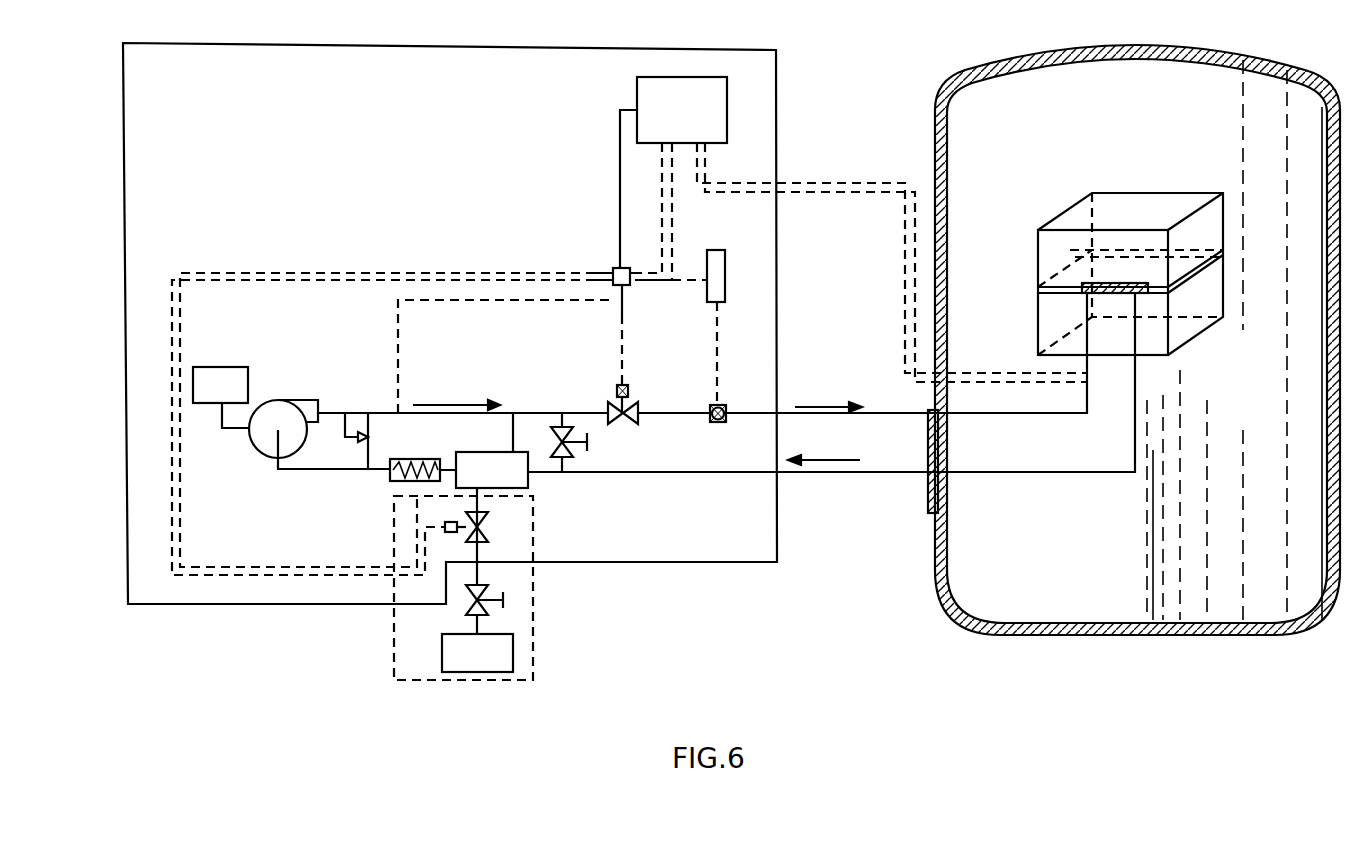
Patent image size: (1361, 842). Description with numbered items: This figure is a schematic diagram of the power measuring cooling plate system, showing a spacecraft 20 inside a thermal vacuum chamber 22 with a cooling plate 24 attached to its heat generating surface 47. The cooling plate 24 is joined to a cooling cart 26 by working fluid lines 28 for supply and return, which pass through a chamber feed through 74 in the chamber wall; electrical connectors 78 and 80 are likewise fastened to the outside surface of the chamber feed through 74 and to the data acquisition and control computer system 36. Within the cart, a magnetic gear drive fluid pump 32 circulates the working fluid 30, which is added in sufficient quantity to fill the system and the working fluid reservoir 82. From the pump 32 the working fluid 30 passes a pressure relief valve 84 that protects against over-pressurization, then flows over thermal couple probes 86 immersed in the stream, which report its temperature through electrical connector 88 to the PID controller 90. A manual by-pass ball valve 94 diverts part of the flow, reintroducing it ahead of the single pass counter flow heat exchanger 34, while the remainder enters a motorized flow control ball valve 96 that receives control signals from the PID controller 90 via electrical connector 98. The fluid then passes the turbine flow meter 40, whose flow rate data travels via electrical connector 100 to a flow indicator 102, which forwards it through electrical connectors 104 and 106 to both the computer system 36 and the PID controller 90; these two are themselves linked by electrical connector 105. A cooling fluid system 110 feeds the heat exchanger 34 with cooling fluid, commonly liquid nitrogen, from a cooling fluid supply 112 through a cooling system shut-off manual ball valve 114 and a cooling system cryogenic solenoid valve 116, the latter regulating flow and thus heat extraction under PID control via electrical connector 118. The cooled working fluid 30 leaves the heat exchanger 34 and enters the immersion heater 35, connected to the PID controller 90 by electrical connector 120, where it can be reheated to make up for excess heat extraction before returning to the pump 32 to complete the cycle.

The spacecraft 20 is at (1228, 208).
The thermal vacuum chamber 22 is at (948, 177).
The cooling plate 24 is at (1072, 280).
The cooling cart 26 is at (786, 93).
The working fluid lines 28 is at (834, 482).
The working fluid 30 is at (828, 417).
The magnetic gear drive fluid pump 32 is at (266, 454).
The heat exchanger 34 is at (470, 452).
The immersion heater 35 is at (382, 482).
The data acquisition and control computer 36 is at (728, 108).
The turbine flow meter 40 is at (726, 422).
The heat generating surface 47 is at (1210, 270).
The chamber feed through 74 is at (936, 368).
The electrical connector 78 is at (985, 372).
The electrical connector 80 is at (1037, 383).
The working fluid reservoir 82 is at (233, 367).
The pressure relief valve 84 is at (368, 420).
The thermal couple probes 86 is at (398, 414).
The electrical connector 88 is at (396, 346).
The proportional integral derivative (PID) controller 90 is at (608, 265).
The manual by-pass ball valve 94 is at (551, 440).
The motorized flow control ball valve 96 is at (628, 426).
The electrical connector 98 is at (620, 366).
The electrical connector 100 is at (718, 358).
The flow indicator 102 is at (726, 268).
The electrical connector 104 is at (673, 240).
The electrical connector 105 is at (618, 162).
The electrical connector 106 is at (648, 284).
The cooling fluid system 110 is at (478, 681).
The cooling fluid supply 112 is at (441, 656).
The cooling system shut-off manual ball valve 114 is at (488, 600).
The cooling system cryogenic solenoid valve 116 is at (488, 527).
The electrical connector 118 is at (293, 578).
The electrical connector 120 is at (258, 566).